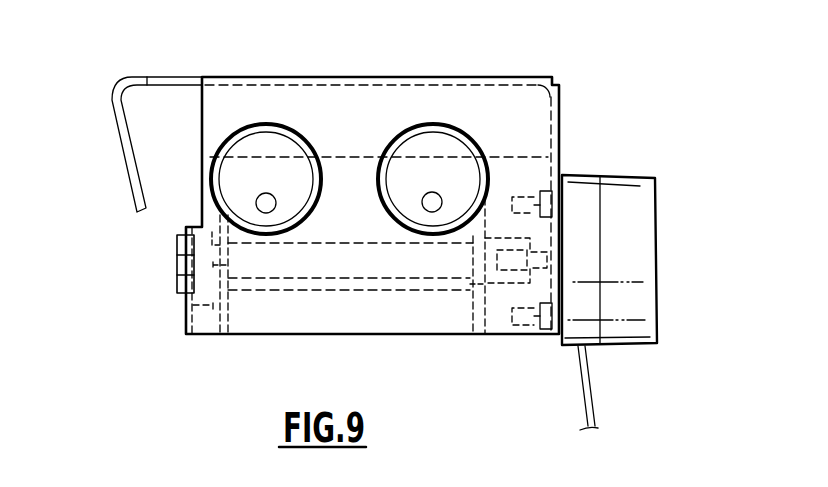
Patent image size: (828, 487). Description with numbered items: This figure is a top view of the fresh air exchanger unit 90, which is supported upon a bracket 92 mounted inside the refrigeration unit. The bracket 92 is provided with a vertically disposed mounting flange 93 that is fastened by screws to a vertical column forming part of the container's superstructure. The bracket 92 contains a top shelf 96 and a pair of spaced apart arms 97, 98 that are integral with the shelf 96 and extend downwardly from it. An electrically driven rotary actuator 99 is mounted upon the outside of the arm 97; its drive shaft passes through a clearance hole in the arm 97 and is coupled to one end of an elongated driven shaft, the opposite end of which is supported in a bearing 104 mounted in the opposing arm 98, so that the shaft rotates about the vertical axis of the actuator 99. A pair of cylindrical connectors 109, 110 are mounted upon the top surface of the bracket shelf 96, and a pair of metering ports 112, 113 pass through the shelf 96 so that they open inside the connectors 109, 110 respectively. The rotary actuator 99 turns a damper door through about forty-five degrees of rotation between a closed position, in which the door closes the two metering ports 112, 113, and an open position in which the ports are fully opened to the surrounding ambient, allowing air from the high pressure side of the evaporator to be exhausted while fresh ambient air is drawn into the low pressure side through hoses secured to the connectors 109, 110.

The fresh air exchanger unit 90 is at (520, 55).
The bracket 92 is at (569, 111).
The mounting flange 93 is at (125, 160).
The top shelf 96 is at (235, 105).
The arm 97 is at (560, 153).
The arm 98 is at (186, 327).
The rotary actuator 99 is at (655, 257).
The bearing 104 is at (177, 280).
The cylindrical connector 109 is at (203, 186).
The cylindrical connector 110 is at (430, 122).
The metering port 112 is at (266, 193).
The metering port 113 is at (424, 197).